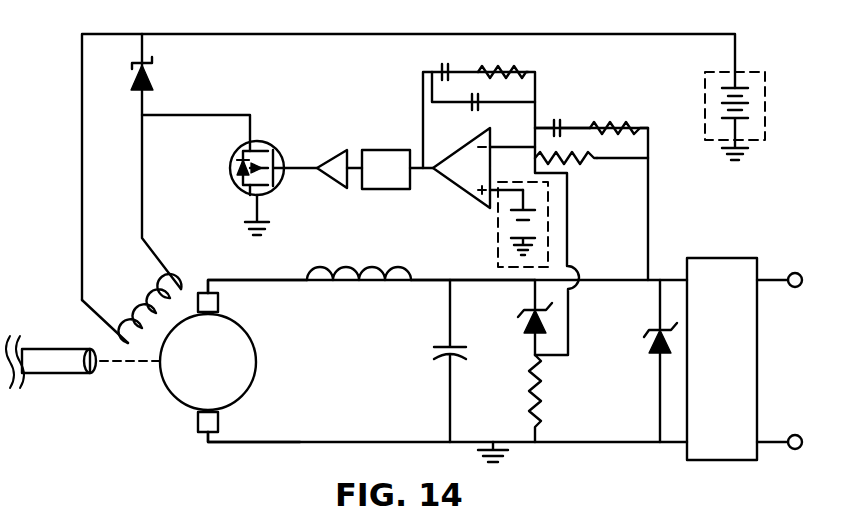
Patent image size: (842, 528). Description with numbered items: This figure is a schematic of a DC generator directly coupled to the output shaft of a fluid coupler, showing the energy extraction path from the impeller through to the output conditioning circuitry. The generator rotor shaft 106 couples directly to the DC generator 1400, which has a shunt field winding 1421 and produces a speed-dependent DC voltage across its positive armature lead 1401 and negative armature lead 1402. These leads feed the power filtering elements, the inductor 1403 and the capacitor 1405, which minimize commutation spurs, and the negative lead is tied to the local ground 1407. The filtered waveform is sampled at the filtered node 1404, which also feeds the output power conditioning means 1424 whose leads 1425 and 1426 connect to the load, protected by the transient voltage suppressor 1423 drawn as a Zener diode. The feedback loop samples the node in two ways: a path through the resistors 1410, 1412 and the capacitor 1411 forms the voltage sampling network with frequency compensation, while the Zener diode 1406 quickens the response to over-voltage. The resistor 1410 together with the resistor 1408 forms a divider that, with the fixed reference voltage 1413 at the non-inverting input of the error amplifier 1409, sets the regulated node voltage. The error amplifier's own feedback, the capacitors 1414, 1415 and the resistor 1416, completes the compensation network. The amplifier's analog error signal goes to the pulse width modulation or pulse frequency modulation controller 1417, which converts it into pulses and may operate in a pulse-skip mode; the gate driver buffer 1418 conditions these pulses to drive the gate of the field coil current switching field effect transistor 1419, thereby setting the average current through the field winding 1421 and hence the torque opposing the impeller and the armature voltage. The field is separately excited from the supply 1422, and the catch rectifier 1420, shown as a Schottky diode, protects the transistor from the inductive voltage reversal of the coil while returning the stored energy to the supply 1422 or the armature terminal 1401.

The generator rotor shaft 106 is at (46, 348).
The DC generator 1400 is at (167, 398).
The positive armature lead 1401 is at (243, 285).
The negative armature lead 1402 is at (258, 441).
The inductor 1403 is at (347, 264).
The filtered node 1404 is at (437, 278).
The capacitor 1405 is at (436, 353).
The Zener diode 1406 is at (525, 313).
The local ground 1407 is at (513, 456).
The resistor 1408 is at (513, 398).
The error amplifier 1409 is at (461, 168).
The resistor 1410 is at (590, 160).
The capacitor 1411 is at (564, 110).
The resistor 1412 is at (637, 109).
The reference voltage 1413 is at (496, 220).
The capacitor 1414 is at (480, 105).
The capacitor 1415 is at (453, 57).
The resistor 1416 is at (499, 68).
The pulse width modulation or pulse frequency modulation controller 1417 is at (386, 169).
The gate driver buffer 1418 is at (343, 148).
The field coil current switching field effect transistor 1419 is at (278, 146).
The catch rectifier 1420 is at (160, 64).
The field winding 1421 is at (184, 284).
The separately excited field winding source 1422 is at (703, 74).
The transient voltage suppressor 1423 is at (655, 349).
The output power conditioning means 1424 is at (722, 359).
The lead 1425 is at (795, 288).
The negative differential voltage lead 1426 is at (794, 434).